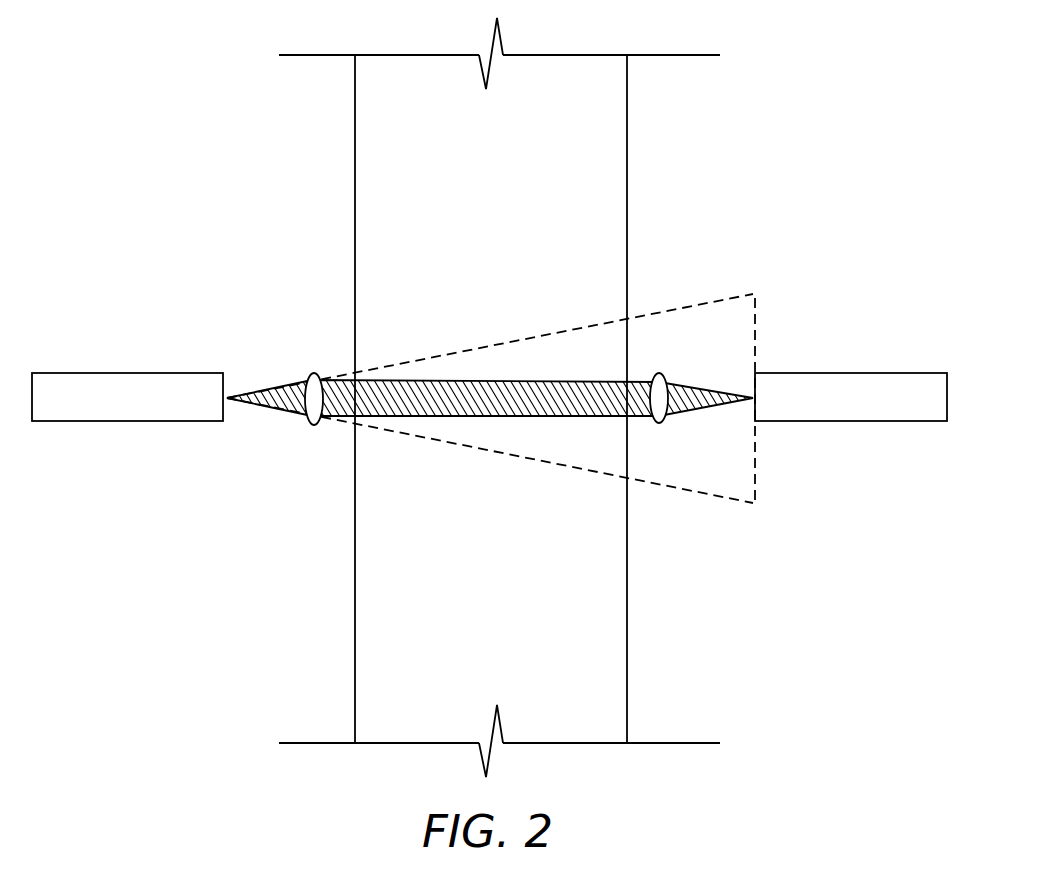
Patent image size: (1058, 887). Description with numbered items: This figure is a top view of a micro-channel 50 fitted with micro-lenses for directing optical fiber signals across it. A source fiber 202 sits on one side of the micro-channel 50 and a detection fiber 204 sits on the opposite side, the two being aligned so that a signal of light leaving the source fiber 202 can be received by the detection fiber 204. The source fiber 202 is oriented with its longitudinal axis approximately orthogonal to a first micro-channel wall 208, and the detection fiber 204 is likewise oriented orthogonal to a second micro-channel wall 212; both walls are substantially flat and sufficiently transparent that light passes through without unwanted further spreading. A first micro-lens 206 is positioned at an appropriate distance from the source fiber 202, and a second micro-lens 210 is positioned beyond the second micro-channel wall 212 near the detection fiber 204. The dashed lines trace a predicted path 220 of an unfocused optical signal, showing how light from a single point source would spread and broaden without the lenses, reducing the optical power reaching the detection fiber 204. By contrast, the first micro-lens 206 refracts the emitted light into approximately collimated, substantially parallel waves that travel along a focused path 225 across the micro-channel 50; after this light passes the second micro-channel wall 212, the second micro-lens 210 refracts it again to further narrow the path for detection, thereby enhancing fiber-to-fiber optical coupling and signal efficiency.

The micro-channel 50 is at (355, 97).
The source fiber 202 is at (162, 373).
The detection fiber 204 is at (885, 373).
The first micro-lens 206 is at (312, 376).
The first micro-channel wall 208 is at (355, 293).
The second micro-lens 210 is at (658, 424).
The second micro-channel wall 212 is at (627, 150).
The predicted path 220 is at (722, 299).
The focused path 225 is at (638, 383).